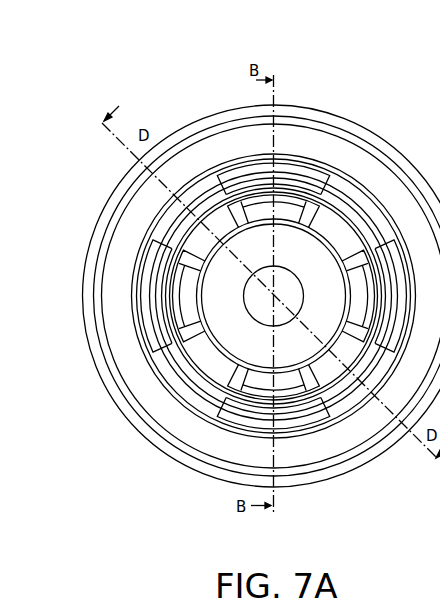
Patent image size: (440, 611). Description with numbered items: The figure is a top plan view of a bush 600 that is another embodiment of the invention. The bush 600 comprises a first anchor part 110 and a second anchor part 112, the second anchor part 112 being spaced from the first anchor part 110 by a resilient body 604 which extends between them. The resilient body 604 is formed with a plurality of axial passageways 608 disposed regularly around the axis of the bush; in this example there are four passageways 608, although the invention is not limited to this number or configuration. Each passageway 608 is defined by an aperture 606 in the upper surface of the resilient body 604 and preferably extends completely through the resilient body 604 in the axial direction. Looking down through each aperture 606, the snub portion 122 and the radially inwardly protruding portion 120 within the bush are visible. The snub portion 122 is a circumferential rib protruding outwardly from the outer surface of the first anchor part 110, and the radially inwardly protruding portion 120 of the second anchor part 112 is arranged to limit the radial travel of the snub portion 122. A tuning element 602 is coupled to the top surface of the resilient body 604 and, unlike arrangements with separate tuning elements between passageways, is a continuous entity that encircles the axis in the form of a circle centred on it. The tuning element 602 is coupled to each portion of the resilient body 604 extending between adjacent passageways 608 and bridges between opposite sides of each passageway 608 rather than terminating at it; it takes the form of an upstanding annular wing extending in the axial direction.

The bush 600 is at (158, 72).
The first anchor part 110 is at (232, 262).
The second anchor part 112 is at (363, 458).
The radially inwardly protruding portion 120 is at (147, 300).
The snub portion 122 is at (187, 283).
The tuning element 602 is at (210, 388).
The resilient body 604 is at (183, 375).
The aperture 606 is at (155, 348).
The axial passageway 608 is at (157, 315).